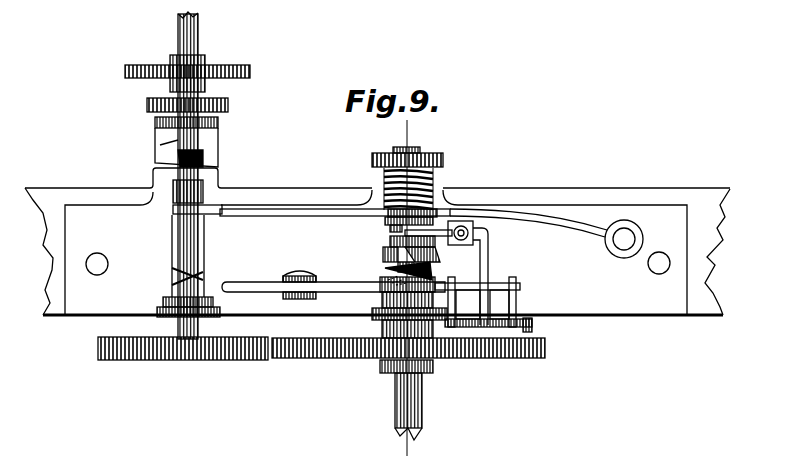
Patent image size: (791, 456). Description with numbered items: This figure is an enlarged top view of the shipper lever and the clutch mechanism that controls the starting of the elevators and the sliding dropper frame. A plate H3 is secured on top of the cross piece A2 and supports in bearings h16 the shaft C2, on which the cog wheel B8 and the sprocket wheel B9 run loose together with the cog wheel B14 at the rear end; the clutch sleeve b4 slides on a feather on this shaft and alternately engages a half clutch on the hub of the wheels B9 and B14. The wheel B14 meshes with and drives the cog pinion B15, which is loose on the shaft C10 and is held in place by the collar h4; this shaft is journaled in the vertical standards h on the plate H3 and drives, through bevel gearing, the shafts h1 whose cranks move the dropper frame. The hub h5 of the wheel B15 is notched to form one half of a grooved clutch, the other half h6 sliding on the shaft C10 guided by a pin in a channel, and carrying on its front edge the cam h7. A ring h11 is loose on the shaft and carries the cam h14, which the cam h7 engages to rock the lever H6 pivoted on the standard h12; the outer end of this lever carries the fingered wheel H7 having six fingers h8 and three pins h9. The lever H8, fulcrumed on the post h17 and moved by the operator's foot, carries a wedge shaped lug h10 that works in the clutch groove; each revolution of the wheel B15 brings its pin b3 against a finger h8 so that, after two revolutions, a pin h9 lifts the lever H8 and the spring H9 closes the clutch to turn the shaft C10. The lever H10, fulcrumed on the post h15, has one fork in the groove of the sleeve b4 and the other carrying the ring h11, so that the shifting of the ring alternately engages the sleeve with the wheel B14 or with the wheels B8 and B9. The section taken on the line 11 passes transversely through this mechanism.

The cross piece A2 is at (377, 241).
The plate H3 is at (376, 252).
The shaft C2 is at (202, 175).
The cog wheel B8 is at (250, 70).
The sprocket wheel B9 is at (228, 106).
The bearings h16 is at (218, 123).
The clutch sleeve b4 is at (205, 188).
The cog wheel B14 is at (135, 362).
The cog pinion B15 is at (355, 350).
The lever H10 is at (288, 207).
The section line 11 is at (401, 282).
The standards h is at (424, 158).
The spring H9 is at (433, 185).
The ring h11 is at (392, 227).
The cam h14 is at (405, 236).
The clutch member h6 is at (433, 258).
The cam h7 is at (385, 268).
The wedge shaped lug h10 is at (398, 262).
The lever H8 is at (243, 282).
The post h17 is at (300, 299).
The hub h5 is at (378, 283).
The shafts h1 is at (380, 318).
The collar h4 is at (437, 368).
The shaft C10 is at (422, 416).
The standard h12 is at (463, 230).
The lever H6 is at (490, 240).
The fingered wheel H7 is at (505, 372).
The projecting pins h9 is at (492, 305).
The fingers h8 is at (530, 318).
The pin b3 is at (535, 326).
The post h15 is at (624, 252).